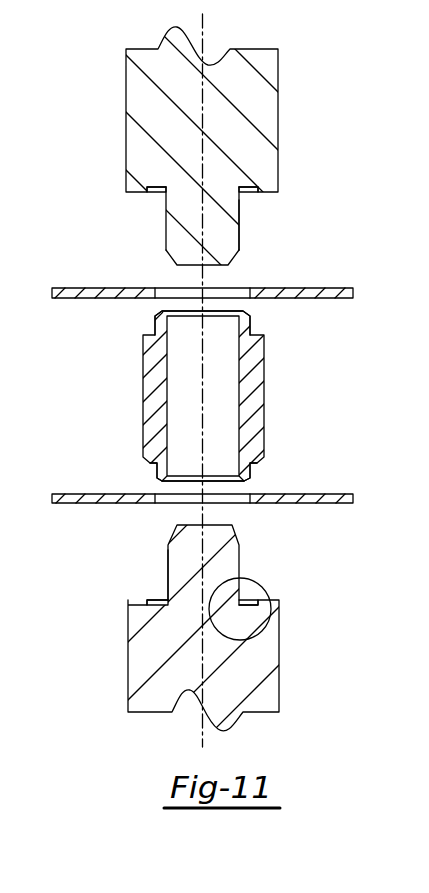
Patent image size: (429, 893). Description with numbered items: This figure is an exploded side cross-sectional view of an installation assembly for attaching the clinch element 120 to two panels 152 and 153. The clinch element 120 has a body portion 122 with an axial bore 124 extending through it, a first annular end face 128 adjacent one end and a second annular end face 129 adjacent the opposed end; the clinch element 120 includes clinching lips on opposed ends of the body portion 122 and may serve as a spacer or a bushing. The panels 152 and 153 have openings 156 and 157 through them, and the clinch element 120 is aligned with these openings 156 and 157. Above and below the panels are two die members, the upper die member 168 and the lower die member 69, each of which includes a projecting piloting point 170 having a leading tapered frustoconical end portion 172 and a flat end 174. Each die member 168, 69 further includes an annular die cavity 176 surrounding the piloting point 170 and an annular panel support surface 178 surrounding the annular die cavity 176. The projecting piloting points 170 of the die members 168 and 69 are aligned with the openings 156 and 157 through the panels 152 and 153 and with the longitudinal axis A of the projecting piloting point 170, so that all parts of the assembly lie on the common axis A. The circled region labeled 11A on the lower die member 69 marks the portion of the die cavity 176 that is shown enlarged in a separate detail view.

The longitudinal axis A is at (203, 24).
The die member 168 is at (137, 78).
The annular die cavity 176 is at (155, 198).
The annular panel support surface 178 is at (275, 200).
The projecting piloting point 170 is at (220, 237).
The flat end 174 is at (184, 272).
The leading tapered frustoconical end portion 172 is at (240, 250).
The panel 152 is at (350, 283).
The opening 156 is at (240, 292).
The clinch element 120 is at (266, 388).
The body portion 122 is at (150, 412).
The axial bore 124 is at (240, 395).
The first annular end face 128 is at (253, 335).
The second annular end face 129 is at (255, 465).
The panel 153 is at (110, 492).
The opening 157 is at (252, 497).
The lower tool block 69 is at (148, 672).
The detail circle 11A is at (258, 632).